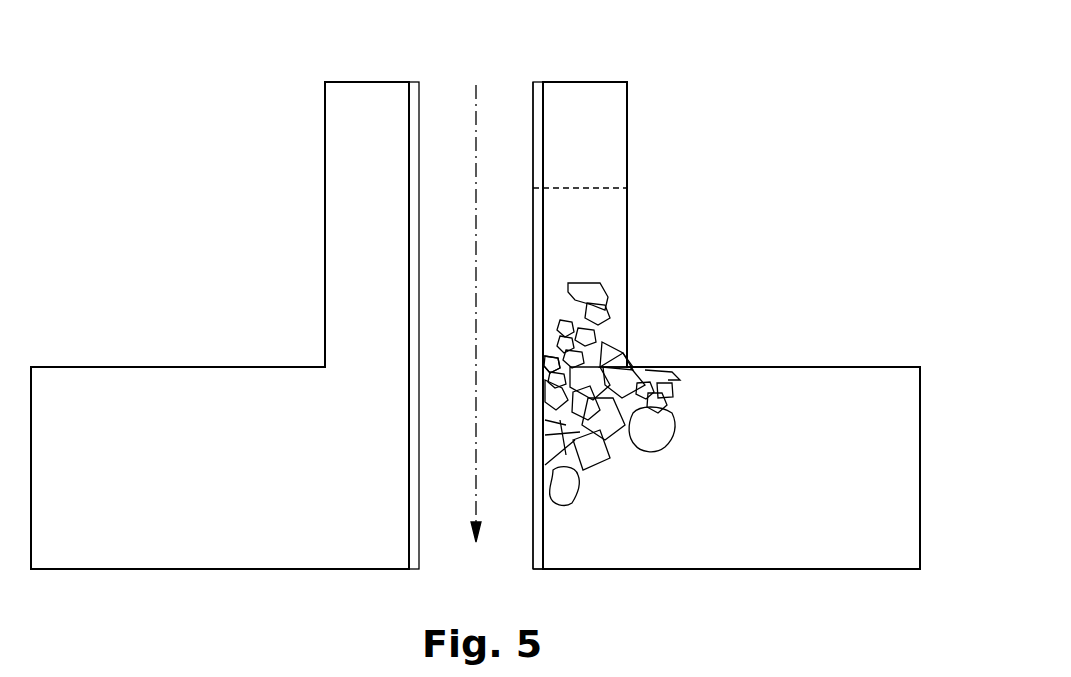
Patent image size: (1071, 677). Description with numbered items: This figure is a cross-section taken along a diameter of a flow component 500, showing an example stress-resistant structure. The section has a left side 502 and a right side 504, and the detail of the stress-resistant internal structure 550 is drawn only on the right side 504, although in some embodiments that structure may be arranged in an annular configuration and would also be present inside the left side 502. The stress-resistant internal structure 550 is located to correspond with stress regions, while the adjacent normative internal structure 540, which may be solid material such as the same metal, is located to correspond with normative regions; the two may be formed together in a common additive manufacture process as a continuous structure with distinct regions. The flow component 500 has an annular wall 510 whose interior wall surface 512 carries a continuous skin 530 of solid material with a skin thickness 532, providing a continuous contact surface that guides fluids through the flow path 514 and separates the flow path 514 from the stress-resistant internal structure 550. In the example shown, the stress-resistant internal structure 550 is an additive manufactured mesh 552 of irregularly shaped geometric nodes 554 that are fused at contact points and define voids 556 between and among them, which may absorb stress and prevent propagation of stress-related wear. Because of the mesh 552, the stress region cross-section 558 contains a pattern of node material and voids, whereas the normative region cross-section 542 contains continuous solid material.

The flow component 500 is at (323, 72).
The left side 502 is at (113, 345).
The right side 504 is at (765, 310).
The annular wall 510 is at (373, 82).
The interior wall surface 512 is at (421, 90).
The flow path 514 is at (474, 293).
The continuous skin 530 is at (531, 552).
The skin thickness 532 is at (545, 575).
The normative internal structure 540 is at (598, 123).
The normative region cross-section 542 is at (628, 188).
The stress-resistant internal structure 550 is at (627, 333).
The additive manufactured mesh 552 is at (617, 377).
The irregularly shaped geometric nodes 554 is at (568, 490).
The voids 556 is at (655, 375).
The stress region cross-section 558 is at (548, 356).